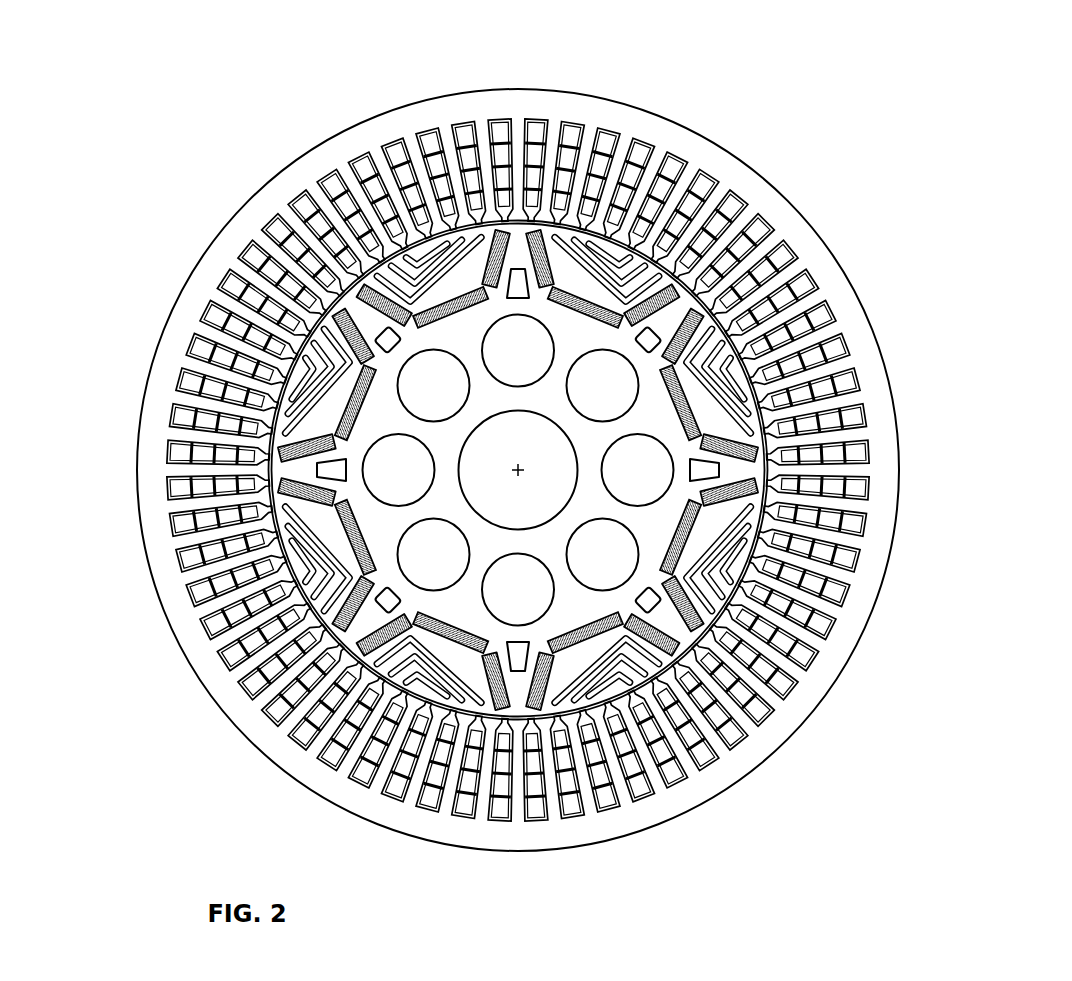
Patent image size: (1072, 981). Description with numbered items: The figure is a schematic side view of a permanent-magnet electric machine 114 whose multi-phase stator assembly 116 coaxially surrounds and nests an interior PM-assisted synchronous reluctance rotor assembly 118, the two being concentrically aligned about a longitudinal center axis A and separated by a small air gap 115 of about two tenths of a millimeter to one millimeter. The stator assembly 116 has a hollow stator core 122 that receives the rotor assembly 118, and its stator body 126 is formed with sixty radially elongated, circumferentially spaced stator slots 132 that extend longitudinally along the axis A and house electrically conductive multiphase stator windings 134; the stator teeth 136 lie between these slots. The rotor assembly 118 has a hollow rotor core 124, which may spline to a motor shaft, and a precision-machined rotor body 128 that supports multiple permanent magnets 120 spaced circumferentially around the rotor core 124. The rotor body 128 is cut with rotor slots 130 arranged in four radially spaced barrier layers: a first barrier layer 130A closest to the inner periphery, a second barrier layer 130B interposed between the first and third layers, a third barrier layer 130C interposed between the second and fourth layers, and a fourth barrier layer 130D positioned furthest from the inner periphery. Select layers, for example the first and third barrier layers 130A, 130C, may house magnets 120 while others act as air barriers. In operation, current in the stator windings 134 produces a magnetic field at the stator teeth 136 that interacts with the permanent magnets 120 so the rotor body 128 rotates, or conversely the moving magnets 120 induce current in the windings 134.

The electric machine 114 is at (535, 462).
The air gap 115 is at (523, 214).
The stator assembly 116 is at (576, 444).
The rotor assembly 118 is at (409, 462).
The permanent magnet 120 is at (276, 481).
The stator core 122 is at (768, 497).
The rotor core 124 is at (484, 443).
The stator body 126 is at (518, 470).
The rotor body 128 is at (517, 228).
The rotor slot 130 is at (345, 482).
The first barrier layer 130A is at (380, 270).
The second barrier layer 130B is at (398, 262).
The third barrier layer 130C is at (416, 254).
The fourth barrier layer 130D is at (447, 243).
The stator slot 132 is at (853, 418).
The stator winding 134 is at (847, 383).
The stator tooth 136 is at (665, 318).
The longitudinal center axis A is at (523, 474).